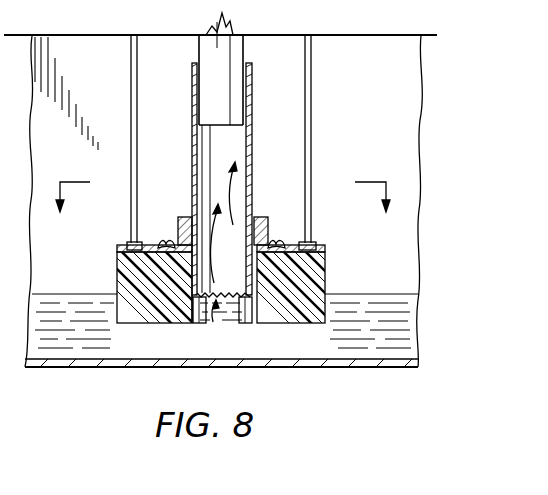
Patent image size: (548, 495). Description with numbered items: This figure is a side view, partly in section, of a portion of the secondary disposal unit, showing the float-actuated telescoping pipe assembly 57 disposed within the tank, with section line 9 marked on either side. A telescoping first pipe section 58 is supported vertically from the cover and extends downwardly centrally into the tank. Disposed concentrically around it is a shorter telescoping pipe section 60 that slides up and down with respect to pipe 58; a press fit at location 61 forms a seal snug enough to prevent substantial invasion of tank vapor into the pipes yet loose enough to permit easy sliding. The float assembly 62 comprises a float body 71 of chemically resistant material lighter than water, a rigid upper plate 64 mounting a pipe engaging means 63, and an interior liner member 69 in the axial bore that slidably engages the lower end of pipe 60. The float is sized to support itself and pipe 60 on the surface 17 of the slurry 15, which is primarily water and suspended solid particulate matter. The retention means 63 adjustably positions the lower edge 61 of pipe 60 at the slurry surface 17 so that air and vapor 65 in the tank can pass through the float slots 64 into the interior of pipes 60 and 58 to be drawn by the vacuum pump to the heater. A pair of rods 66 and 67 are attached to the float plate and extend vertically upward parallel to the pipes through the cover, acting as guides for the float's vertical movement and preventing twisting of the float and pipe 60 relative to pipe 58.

The section line 9- 9 is at (221, 208).
The slurry 15 is at (80, 343).
The surface of the slurry 17 is at (80, 295).
The float-actuated telescoping pipe assembly 57 is at (330, 132).
The telescoping first pipe section 58 is at (245, 50).
The telescoping pipe section 60 is at (252, 140).
The press fit location / lower edge of pipe section 61 is at (197, 56).
The float assembly 62 is at (127, 249).
The retention means 63 is at (278, 222).
The float slots / rigid upper plate 64 is at (218, 308).
The air and vapor 65 is at (246, 186).
The rod 66 is at (131, 77).
The rod 67 is at (311, 77).
The interior liner member 69 is at (186, 321).
The float body 71 is at (325, 268).